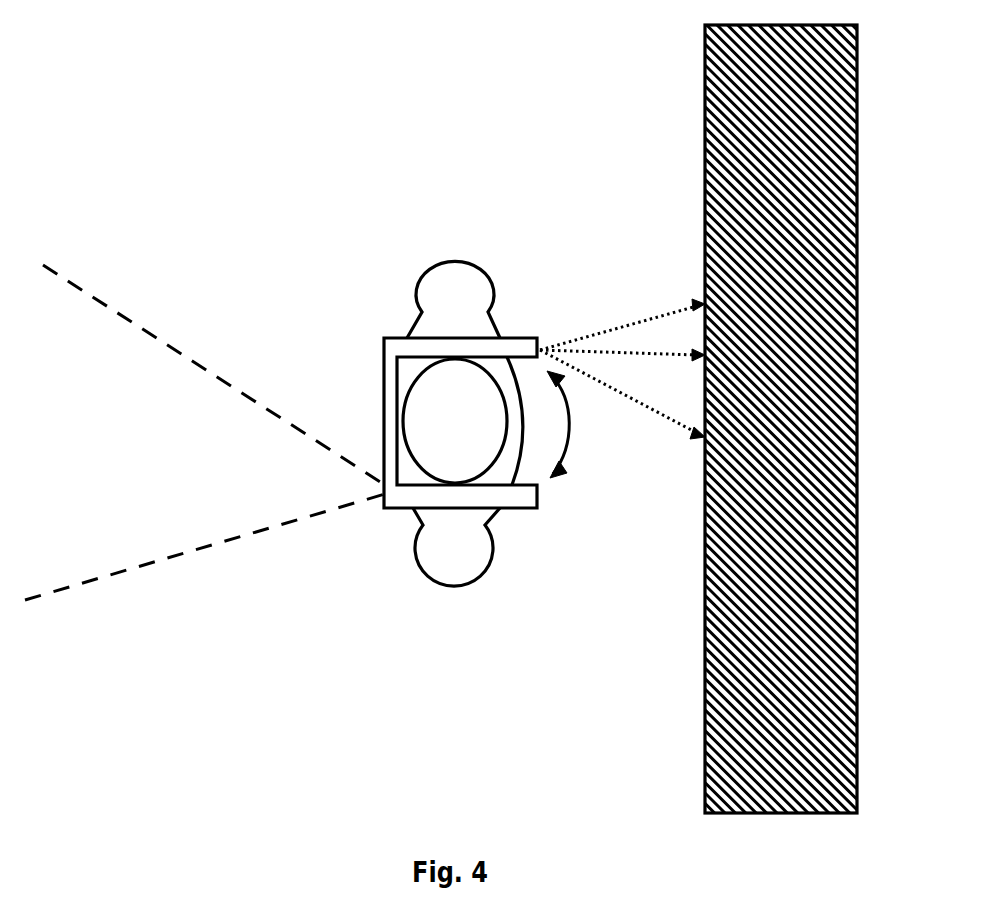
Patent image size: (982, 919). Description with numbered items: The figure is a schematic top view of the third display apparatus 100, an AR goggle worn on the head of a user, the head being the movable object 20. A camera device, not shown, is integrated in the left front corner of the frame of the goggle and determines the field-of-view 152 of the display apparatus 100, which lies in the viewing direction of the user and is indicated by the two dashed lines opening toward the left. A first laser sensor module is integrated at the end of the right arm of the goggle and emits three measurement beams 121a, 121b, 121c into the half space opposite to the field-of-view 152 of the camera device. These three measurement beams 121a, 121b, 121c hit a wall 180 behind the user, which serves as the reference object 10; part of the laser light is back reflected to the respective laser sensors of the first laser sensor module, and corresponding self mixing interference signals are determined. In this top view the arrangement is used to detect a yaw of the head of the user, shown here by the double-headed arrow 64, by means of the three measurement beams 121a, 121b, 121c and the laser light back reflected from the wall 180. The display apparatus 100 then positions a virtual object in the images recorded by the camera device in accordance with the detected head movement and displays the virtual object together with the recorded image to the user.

The reference object 10 is at (450, 261).
The movable object 20 is at (487, 478).
The angular range 64 is at (570, 466).
The display apparatus 100 is at (389, 508).
The first measurement beam of first laser sensor module 121a is at (608, 327).
The second measurement beam of first laser sensor module 121b is at (640, 352).
The third measurement beam of first laser sensor module 121c is at (680, 424).
The field-of-view 152 is at (197, 545).
The wall 180 is at (858, 355).